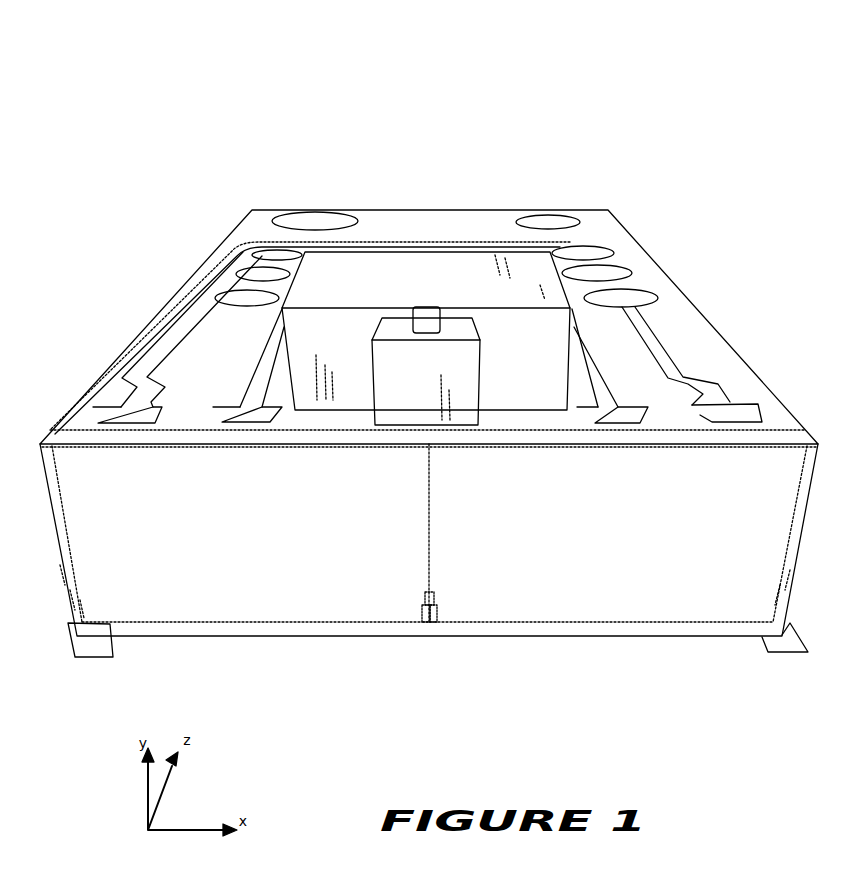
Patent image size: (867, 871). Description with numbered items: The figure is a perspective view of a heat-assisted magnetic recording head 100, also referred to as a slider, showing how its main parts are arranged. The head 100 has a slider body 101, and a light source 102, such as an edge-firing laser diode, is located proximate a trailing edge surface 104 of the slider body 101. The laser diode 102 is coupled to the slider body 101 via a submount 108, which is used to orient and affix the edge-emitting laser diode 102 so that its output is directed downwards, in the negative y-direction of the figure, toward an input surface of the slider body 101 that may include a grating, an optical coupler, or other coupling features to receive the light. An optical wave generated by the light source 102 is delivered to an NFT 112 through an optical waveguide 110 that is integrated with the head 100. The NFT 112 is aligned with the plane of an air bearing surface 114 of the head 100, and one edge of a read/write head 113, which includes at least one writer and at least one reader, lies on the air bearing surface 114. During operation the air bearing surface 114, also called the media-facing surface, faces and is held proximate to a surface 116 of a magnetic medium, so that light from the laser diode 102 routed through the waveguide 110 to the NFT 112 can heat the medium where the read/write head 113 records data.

The HAMR head 100 is at (593, 96).
The slider body 101 is at (243, 230).
The light source 102 is at (480, 370).
The trailing edge surface 104 is at (90, 657).
The submount 108 is at (357, 260).
The optical waveguide 110 is at (429, 527).
The NFT 112 is at (428, 623).
The read/write head 113 is at (437, 623).
The air bearing surface 114 is at (767, 652).
The surface of magnetic medium 116 is at (427, 307).